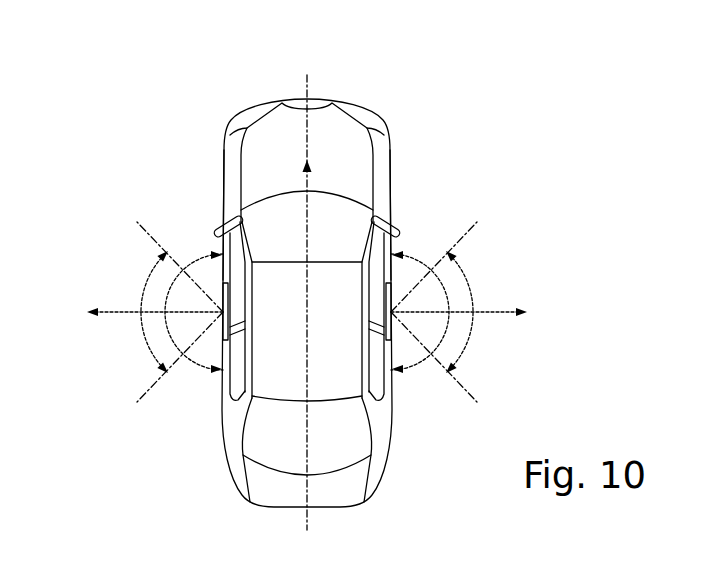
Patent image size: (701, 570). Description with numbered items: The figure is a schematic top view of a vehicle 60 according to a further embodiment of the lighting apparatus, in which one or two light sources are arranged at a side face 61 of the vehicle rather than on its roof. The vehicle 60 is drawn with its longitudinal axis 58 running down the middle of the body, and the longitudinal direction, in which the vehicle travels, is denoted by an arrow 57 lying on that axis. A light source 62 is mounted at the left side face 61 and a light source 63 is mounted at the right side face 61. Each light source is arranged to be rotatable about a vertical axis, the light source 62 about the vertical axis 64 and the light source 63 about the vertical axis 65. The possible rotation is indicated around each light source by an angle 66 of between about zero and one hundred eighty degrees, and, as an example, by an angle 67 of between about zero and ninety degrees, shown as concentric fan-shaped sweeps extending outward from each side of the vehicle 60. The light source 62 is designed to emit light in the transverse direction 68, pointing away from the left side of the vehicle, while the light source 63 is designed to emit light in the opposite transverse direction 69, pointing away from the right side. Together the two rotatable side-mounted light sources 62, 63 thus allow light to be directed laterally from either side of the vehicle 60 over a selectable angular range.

The arrow denoting longitudinal direction 57 is at (312, 182).
The longitudinal axis 58 is at (311, 92).
The vehicle 60 is at (363, 162).
The side face 61 is at (222, 180).
The light source 62 is at (248, 247).
The light source 63 is at (367, 246).
The vertical axis 64 is at (228, 328).
The vertical axis 65 is at (386, 328).
The angle 66 is at (210, 369).
The angle 67 is at (148, 345).
The transverse direction 68 is at (108, 316).
The transverse direction 69 is at (496, 310).